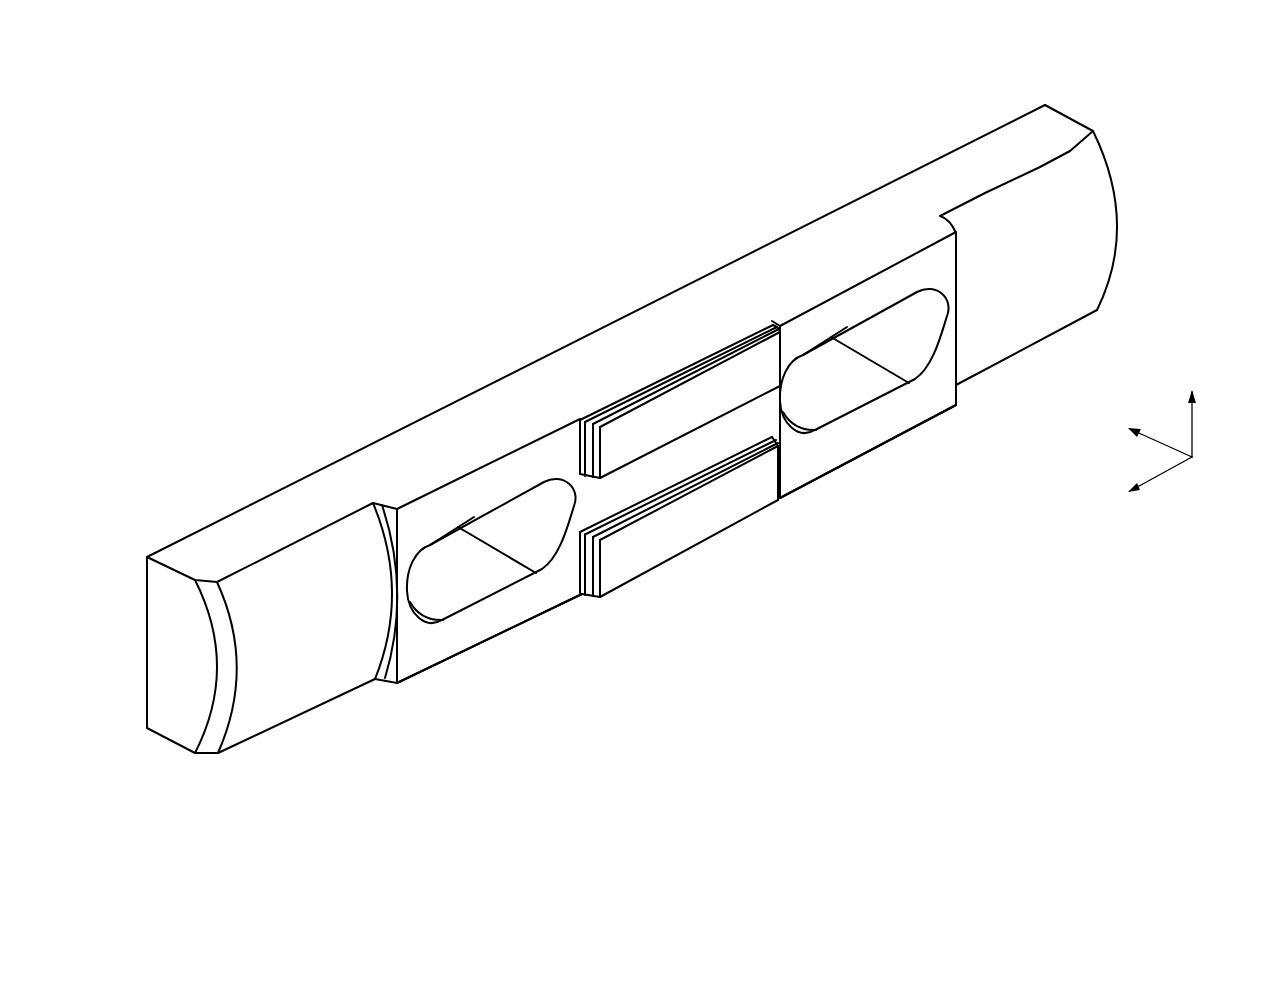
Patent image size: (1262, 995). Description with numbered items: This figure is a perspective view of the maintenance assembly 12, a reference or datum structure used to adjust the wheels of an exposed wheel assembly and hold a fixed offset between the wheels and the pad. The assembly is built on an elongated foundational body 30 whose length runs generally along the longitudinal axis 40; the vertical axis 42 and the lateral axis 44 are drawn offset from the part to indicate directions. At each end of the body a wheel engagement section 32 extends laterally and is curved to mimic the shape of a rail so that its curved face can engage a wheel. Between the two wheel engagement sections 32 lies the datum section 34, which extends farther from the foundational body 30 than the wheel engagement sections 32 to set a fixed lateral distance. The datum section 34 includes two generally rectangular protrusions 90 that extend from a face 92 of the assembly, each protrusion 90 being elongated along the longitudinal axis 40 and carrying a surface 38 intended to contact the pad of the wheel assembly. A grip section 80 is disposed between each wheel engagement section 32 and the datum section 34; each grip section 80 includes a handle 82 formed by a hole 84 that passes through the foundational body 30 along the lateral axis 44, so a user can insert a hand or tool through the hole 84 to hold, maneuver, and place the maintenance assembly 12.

The maintenance assembly 12 is at (1150, 95).
The foundational body 30 is at (272, 493).
The wheel engagement section 32 is at (324, 717).
The datum section 34 is at (684, 565).
The surface 38 is at (703, 398).
The longitudinal axis 40 is at (1167, 473).
The vertical axis 42 is at (1193, 428).
The lateral axis 44 is at (1163, 447).
The grip section 80 is at (545, 632).
The handle 82 is at (466, 466).
The hole 84 is at (493, 597).
The protrusion 90 is at (785, 362).
The face 92 is at (560, 448).